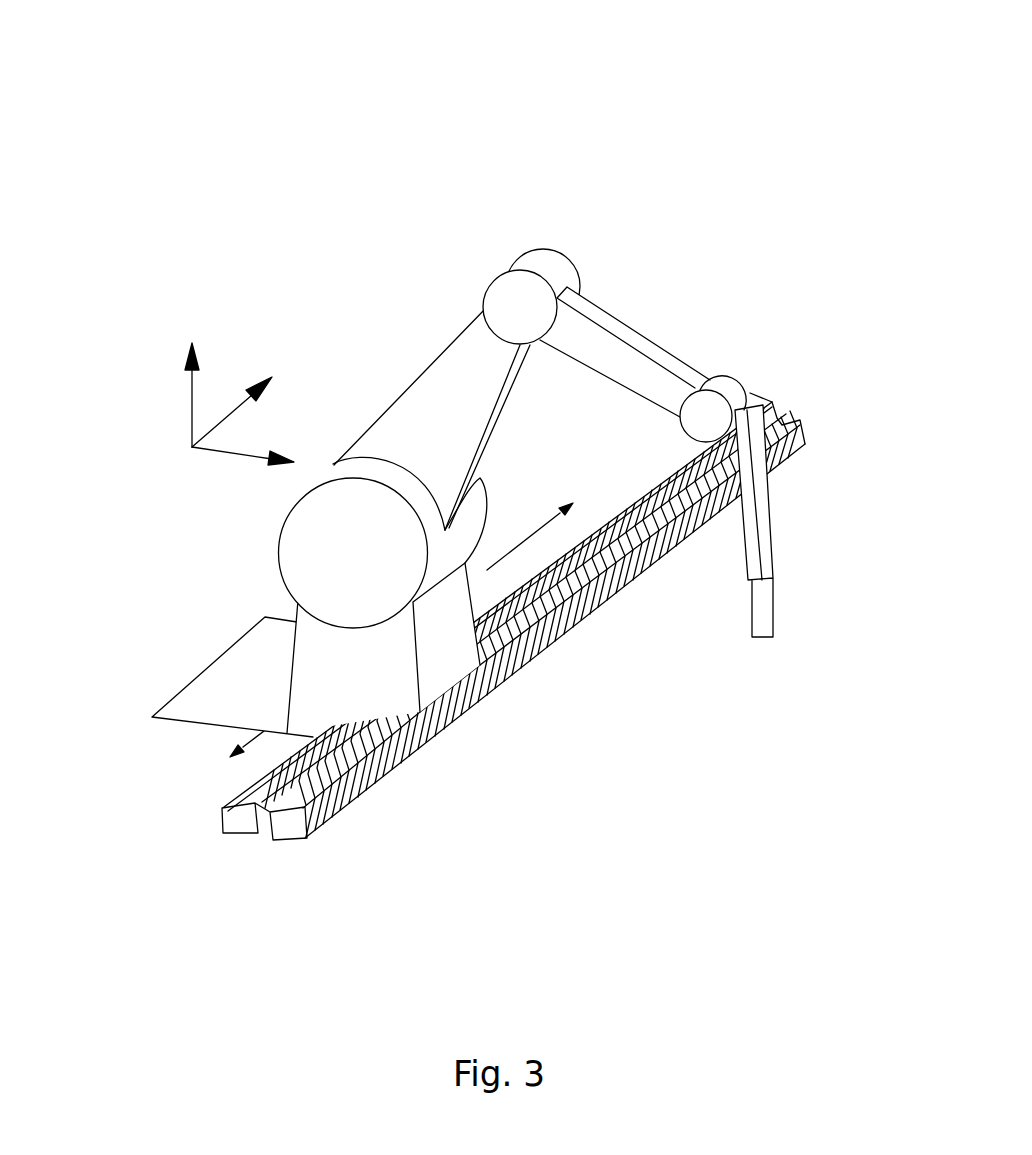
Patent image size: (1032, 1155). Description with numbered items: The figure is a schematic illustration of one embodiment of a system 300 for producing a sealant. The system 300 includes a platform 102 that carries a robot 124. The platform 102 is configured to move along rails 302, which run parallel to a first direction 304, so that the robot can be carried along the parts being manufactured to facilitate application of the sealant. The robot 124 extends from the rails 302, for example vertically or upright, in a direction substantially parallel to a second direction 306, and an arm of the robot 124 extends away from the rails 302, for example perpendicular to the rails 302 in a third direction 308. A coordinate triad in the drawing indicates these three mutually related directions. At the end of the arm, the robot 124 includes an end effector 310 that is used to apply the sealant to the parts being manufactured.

The system 300 is at (515, 85).
The robot 124 is at (587, 440).
The platform 102 is at (197, 673).
The rails 302 is at (286, 826).
The first direction 304 is at (232, 427).
The second direction 306 is at (191, 413).
The third direction 308 is at (237, 456).
The end effector 310 is at (759, 600).